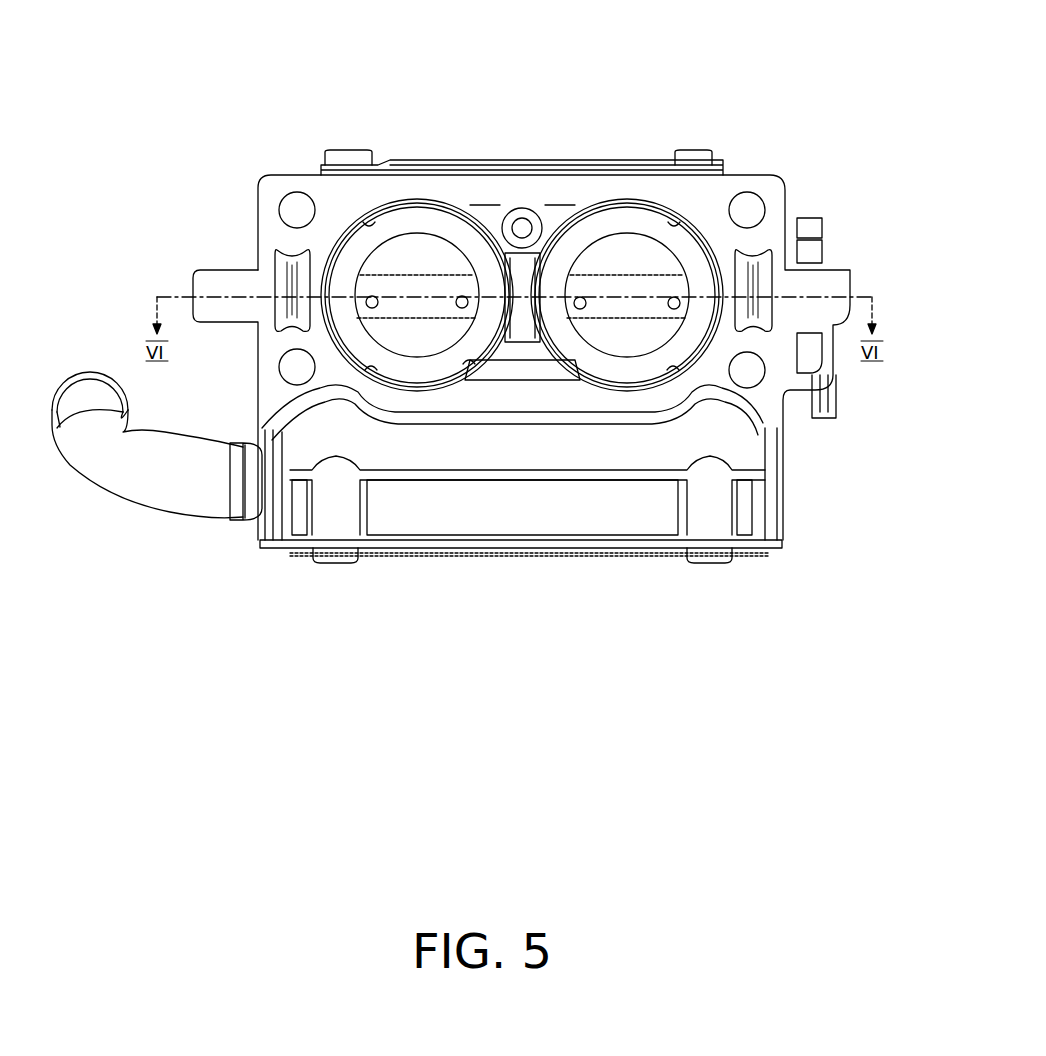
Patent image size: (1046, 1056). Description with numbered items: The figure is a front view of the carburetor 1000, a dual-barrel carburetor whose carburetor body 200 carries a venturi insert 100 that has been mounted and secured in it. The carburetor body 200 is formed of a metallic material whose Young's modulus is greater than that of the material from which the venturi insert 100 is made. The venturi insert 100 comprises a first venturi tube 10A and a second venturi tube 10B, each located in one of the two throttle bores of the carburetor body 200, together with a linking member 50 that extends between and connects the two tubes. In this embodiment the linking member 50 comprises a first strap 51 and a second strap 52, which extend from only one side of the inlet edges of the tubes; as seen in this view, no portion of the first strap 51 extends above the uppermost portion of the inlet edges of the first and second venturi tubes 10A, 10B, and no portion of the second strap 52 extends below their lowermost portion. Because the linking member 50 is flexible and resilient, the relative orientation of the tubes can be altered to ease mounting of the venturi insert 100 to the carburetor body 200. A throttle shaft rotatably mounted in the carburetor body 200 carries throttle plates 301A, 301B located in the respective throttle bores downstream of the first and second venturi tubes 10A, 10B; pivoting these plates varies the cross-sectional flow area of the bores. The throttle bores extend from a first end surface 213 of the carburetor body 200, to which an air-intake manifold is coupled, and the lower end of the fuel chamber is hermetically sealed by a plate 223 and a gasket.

The carburetor 1000 is at (843, 96).
The carburetor body 200 is at (793, 200).
The first venturi tube 10A is at (360, 245).
The second venturi tube 10B is at (638, 222).
The venturi insert 100 is at (428, 205).
The first throttle plate 301A is at (435, 285).
The second throttle plate 301B is at (642, 287).
The first strap 51 is at (567, 200).
The second strap 52 is at (515, 362).
The linking member 50 is at (560, 392).
The first end surface 213 is at (607, 512).
The plate 223 is at (535, 545).